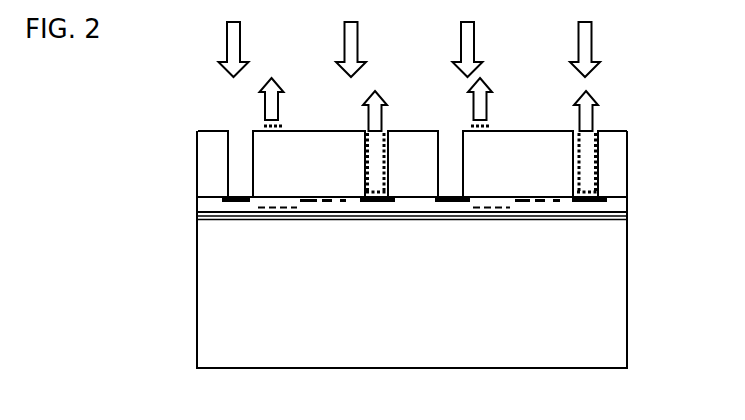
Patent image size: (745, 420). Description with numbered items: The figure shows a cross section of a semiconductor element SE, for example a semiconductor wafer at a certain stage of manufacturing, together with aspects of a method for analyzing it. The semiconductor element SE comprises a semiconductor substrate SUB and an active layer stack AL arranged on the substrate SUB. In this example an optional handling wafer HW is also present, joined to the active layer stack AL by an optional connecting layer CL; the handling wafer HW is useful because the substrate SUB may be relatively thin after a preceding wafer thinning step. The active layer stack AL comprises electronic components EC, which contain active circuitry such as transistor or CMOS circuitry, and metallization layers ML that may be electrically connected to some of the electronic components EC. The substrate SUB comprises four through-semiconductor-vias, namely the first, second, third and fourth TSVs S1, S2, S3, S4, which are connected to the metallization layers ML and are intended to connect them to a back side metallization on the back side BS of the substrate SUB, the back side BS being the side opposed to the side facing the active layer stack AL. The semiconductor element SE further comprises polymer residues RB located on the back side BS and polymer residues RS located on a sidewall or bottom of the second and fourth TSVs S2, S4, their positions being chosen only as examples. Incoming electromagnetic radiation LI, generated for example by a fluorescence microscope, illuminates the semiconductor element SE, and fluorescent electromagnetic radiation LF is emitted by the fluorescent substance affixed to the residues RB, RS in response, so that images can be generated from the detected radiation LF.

The incoming electromagnetic radiation LI is at (414, 49).
The fluorescent electromagnetic radiation LF is at (437, 103).
The back side BS is at (197, 130).
The polymer residues RB is at (262, 126).
The polymer residues RS is at (364, 130).
The first TSV S1 is at (240, 164).
The second TSV S2 is at (375, 172).
The third TSV S3 is at (450, 164).
The fourth TSV S4 is at (587, 180).
The semiconductor substrate SUB is at (207, 175).
The active layer stack AL is at (618, 205).
The connecting layer CL is at (207, 217).
The metallization layers ML is at (233, 203).
The electronic components EC is at (300, 208).
The handling wafer HW is at (412, 294).
The semiconductor element SE is at (380, 249).